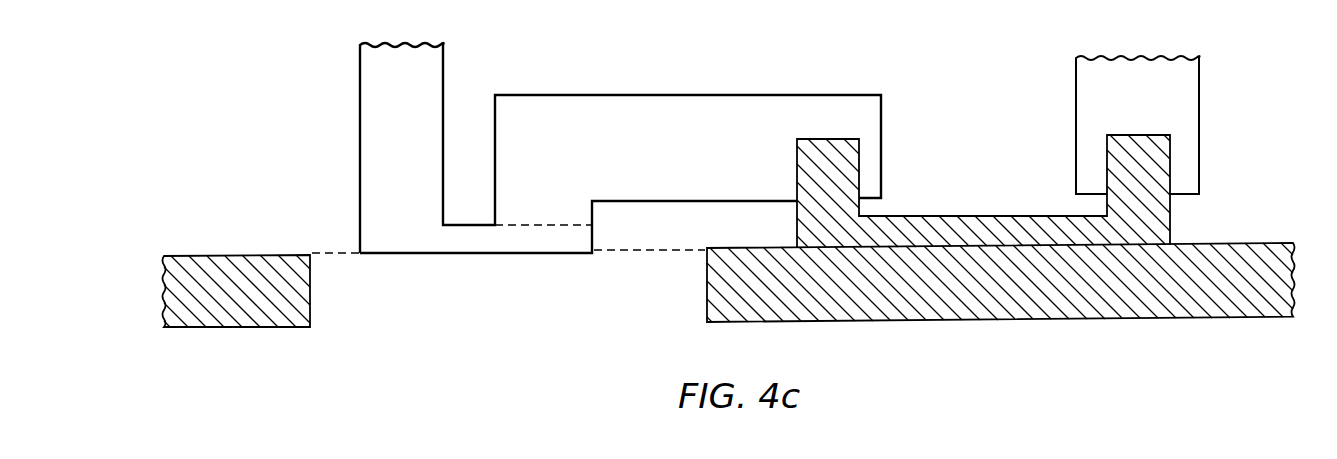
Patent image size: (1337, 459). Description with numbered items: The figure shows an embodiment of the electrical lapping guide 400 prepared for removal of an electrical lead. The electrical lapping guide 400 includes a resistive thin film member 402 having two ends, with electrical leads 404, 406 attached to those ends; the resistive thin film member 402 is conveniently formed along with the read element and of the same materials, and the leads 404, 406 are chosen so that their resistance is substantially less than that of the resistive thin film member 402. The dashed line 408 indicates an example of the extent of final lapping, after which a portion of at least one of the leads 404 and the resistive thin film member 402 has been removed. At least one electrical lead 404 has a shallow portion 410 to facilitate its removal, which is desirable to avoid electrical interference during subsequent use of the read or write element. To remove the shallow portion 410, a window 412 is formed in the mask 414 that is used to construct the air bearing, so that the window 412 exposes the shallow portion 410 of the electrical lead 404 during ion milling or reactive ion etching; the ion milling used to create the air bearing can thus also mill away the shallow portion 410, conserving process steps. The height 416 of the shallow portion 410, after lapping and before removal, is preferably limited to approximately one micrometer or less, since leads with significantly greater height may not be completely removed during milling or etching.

The electrical lapping guide 400 is at (238, 393).
The resistive thin film member 402 is at (1172, 218).
The electrical lead 404 is at (848, 92).
The electrical lead 406 is at (1202, 104).
The dashed line 408 is at (325, 250).
The shallow portion 410 is at (496, 266).
The window 412 is at (707, 341).
The mask 414 is at (1020, 320).
The height 416 is at (620, 225).